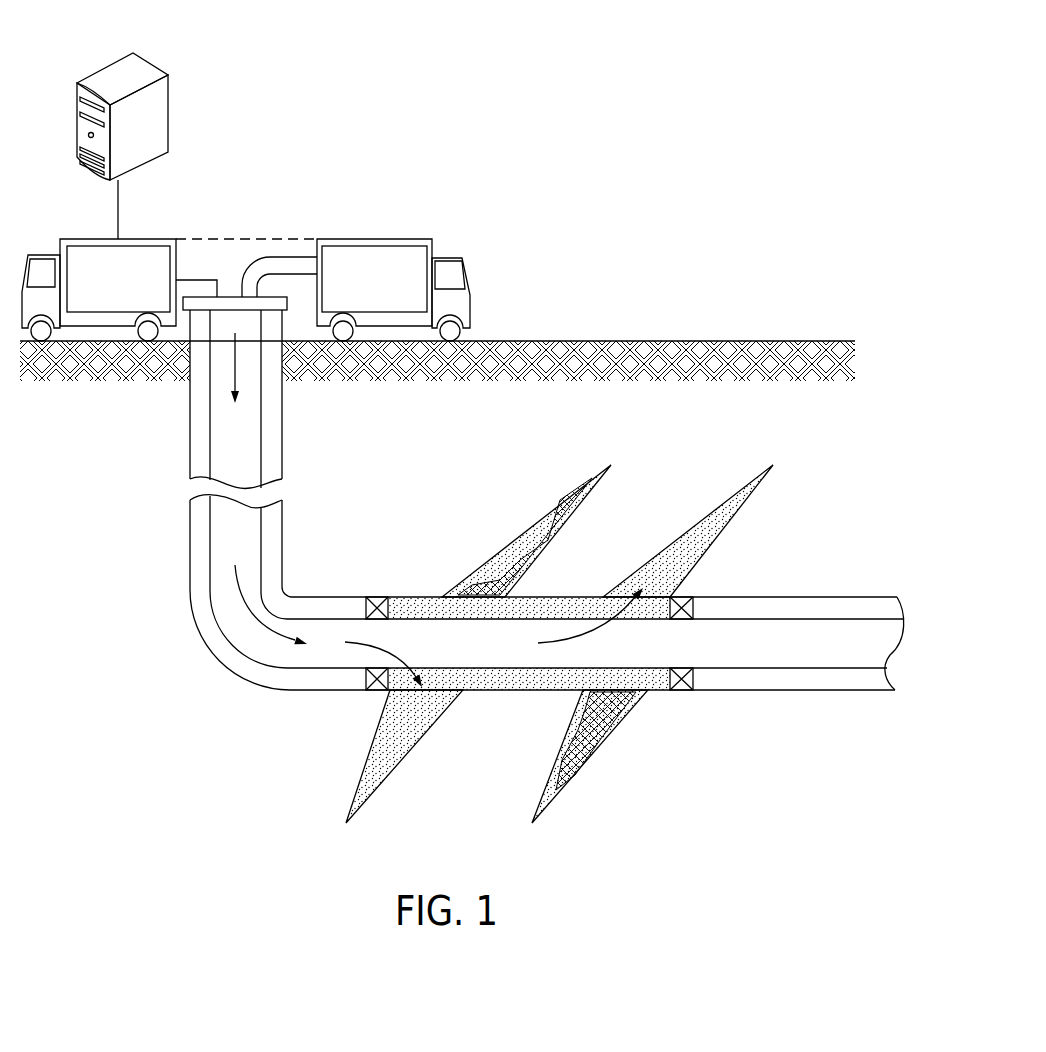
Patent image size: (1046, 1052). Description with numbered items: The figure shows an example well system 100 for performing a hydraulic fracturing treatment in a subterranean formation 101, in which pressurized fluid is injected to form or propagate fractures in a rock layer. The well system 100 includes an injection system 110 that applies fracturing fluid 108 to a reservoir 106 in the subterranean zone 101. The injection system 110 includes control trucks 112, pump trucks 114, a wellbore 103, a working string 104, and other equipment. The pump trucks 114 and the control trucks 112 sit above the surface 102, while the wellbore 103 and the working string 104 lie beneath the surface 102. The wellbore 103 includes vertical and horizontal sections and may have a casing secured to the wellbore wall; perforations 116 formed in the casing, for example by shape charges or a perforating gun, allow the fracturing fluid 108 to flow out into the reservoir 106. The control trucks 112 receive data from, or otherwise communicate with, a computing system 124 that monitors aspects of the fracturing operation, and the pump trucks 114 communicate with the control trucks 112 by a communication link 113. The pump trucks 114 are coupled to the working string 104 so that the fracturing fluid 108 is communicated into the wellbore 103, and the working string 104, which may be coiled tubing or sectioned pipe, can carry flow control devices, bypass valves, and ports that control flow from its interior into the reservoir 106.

The well system 100 is at (198, 728).
The subterranean formation 101 is at (748, 449).
The surface 102 is at (722, 340).
The wellbore 103 is at (200, 430).
The working string 104 is at (210, 584).
The reservoir 106 is at (768, 794).
The fracturing fluid 108 is at (240, 648).
The injection system 110 is at (477, 217).
The control trucks 112 is at (134, 285).
The communication link 113 is at (230, 239).
The pump trucks 114 is at (391, 285).
The perforations 116 is at (579, 505).
The computing system 124 is at (101, 70).